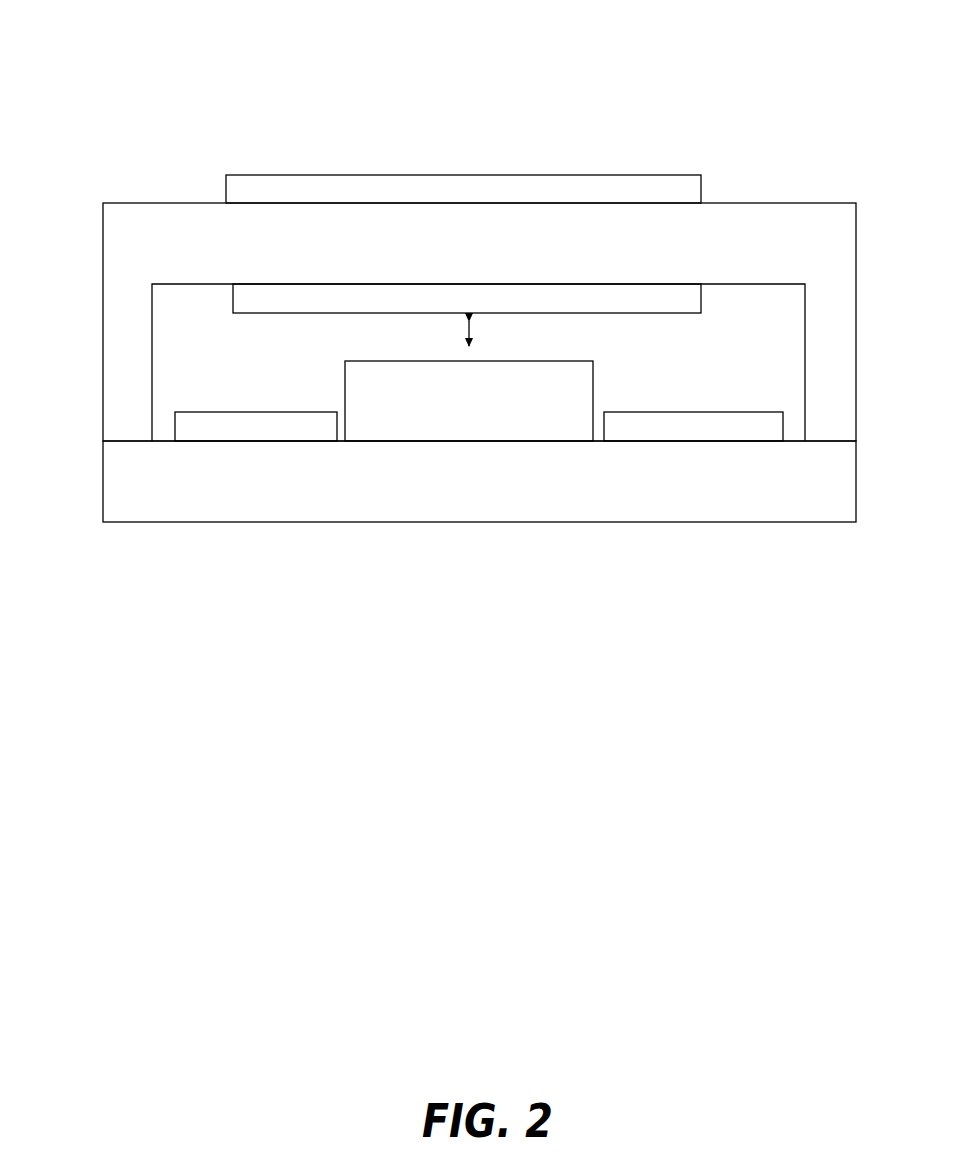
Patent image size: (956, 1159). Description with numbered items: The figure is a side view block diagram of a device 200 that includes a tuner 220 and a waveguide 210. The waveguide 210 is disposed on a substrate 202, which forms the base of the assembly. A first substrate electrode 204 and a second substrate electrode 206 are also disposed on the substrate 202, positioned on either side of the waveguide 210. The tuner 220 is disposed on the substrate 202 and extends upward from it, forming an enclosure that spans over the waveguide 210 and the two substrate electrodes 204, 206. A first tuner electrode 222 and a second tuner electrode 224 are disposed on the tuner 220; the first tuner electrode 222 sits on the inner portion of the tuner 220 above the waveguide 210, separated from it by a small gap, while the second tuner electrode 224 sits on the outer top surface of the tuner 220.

The device 200 is at (204, 36).
The substrate 202 is at (103, 475).
The first substrate electrode 204 is at (265, 412).
The second substrate electrode 206 is at (700, 412).
The waveguide 210 is at (413, 361).
The tuner 220 is at (137, 203).
The first tuner electrode 222 is at (423, 284).
The second tuner electrode 224 is at (552, 175).